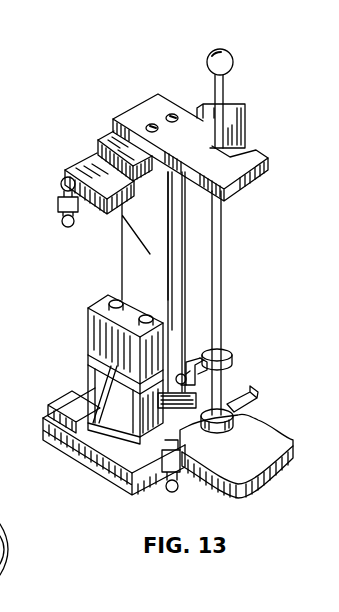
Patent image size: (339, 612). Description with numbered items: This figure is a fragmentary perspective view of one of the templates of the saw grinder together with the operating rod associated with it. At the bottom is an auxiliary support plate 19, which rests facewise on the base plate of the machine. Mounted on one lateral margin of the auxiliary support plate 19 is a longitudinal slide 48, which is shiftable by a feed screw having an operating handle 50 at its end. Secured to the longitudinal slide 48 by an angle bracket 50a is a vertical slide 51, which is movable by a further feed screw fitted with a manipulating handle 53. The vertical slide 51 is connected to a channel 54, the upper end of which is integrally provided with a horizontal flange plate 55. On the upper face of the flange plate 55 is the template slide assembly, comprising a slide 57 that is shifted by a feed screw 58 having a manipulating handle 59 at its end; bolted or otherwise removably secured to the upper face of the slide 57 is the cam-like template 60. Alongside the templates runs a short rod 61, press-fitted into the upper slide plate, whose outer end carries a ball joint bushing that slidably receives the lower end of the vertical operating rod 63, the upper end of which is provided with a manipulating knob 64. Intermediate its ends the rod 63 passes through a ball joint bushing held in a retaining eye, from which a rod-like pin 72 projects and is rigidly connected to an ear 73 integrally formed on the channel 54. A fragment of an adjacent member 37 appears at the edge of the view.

The auxiliary support plate 19 is at (246, 486).
The frame member 37 is at (18, 498).
The longitudinal slide 48 is at (112, 449).
The operating handle 50 is at (188, 488).
The angle bracket 50a is at (86, 366).
The vertical slide 51 is at (200, 405).
The manipulating handle 53 is at (92, 321).
The channel 54 is at (122, 257).
The horizontal flange plate 55 is at (160, 193).
The slide 57 is at (98, 141).
The feed screw 58 is at (81, 200).
The manipulating handle 59 is at (58, 202).
The cam-like template 60 is at (268, 165).
The short rod 61 is at (254, 402).
The vertical operating rod 63 is at (222, 292).
The manipulating knob 64 is at (233, 63).
The rod-like pin 72 is at (233, 354).
The ear 73 is at (195, 355).